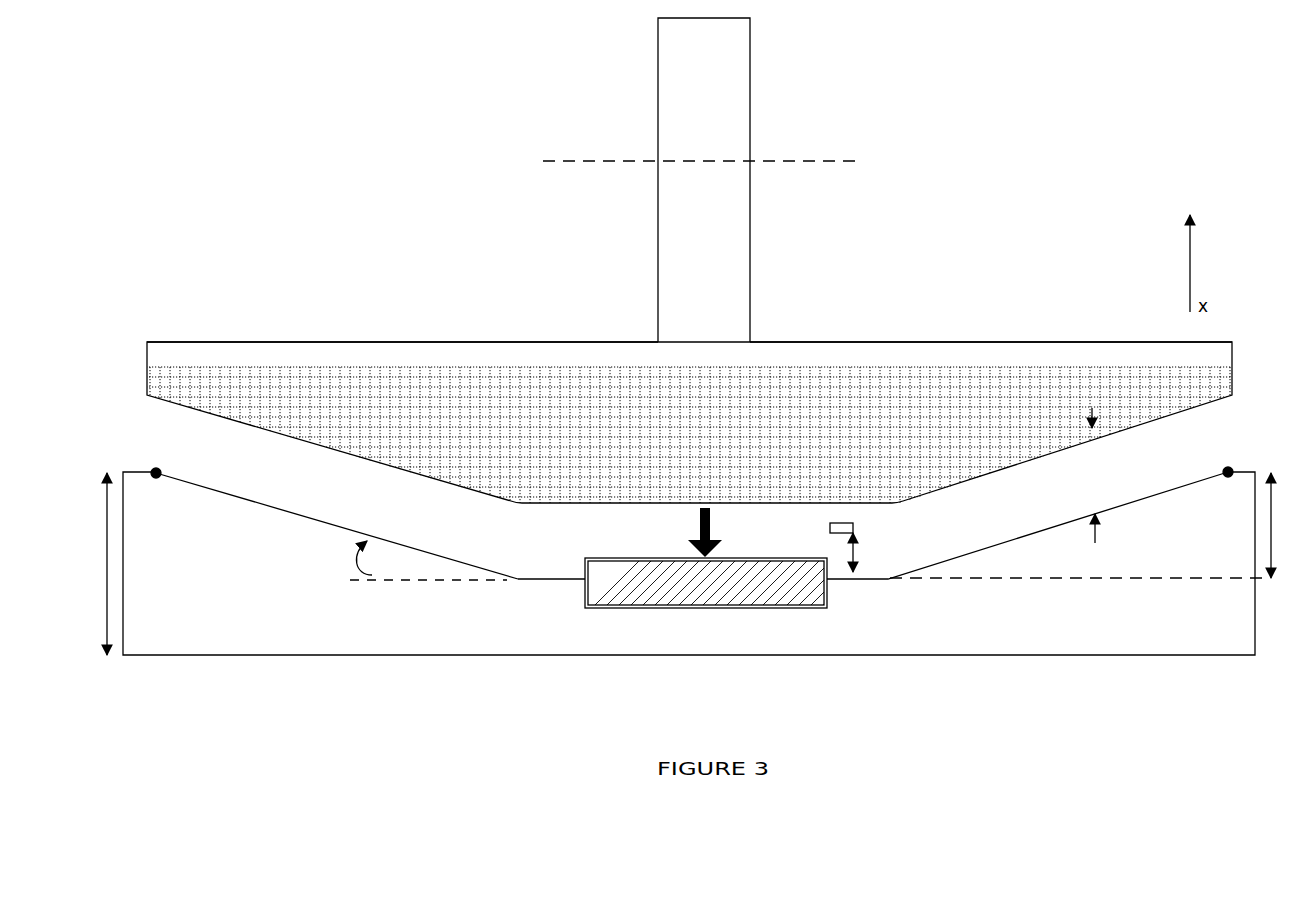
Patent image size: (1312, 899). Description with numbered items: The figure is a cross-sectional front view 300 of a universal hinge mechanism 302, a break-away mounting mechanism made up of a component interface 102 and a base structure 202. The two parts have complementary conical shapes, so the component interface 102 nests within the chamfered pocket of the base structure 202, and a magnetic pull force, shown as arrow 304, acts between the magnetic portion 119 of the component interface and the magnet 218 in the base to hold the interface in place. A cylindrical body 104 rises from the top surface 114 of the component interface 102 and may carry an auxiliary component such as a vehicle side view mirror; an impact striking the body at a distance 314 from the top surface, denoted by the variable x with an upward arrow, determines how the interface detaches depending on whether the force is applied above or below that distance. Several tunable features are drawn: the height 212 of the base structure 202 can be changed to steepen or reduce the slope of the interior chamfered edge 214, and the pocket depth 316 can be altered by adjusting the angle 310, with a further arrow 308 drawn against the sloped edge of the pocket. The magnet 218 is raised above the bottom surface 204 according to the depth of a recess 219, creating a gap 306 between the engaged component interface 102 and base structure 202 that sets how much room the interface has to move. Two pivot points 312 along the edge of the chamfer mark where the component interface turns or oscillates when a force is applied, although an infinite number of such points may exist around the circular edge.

The component interface 102 is at (147, 355).
The cylindrical body 104 is at (750, 52).
The top surface 114 is at (689, 329).
The magnetic portion 119 is at (1208, 388).
The base structure 202 is at (689, 581).
The bottom surface 204 is at (551, 567).
The height 212 is at (89, 564).
The interior chamfered edge 214 is at (290, 518).
The magnet 218 is at (830, 600).
The recess 219 is at (582, 606).
The cross-sectional front view 300 is at (711, 720).
The universal hinge mechanism 302 is at (1065, 84).
The arrow 304 is at (727, 532).
The gap 306 is at (866, 547).
The upward arrow 308 is at (1122, 532).
The angle 310 is at (342, 558).
The pivot points 312 is at (694, 461).
The distance 314 is at (727, 161).
The pocket depth 316 is at (1290, 525).